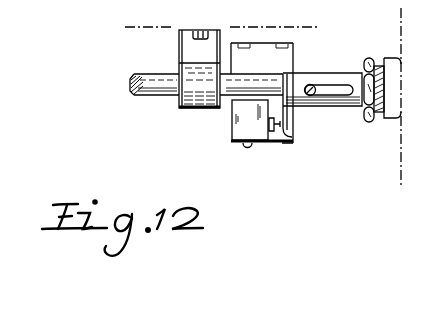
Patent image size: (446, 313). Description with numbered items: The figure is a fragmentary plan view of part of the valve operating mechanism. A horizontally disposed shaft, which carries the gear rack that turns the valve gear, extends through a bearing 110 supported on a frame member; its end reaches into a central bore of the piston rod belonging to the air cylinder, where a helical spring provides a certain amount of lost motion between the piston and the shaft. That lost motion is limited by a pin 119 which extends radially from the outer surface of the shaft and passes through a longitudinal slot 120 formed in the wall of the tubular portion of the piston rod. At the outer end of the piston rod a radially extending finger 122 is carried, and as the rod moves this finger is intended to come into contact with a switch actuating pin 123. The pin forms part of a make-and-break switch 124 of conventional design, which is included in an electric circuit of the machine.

The bearing 110 is at (190, 104).
The pin 119 is at (312, 96).
The longitudinal slot 120 is at (327, 86).
The radially extending finger 122 is at (293, 147).
The switch actuating pin 123 is at (276, 131).
The make-and-break switch 124 is at (246, 128).